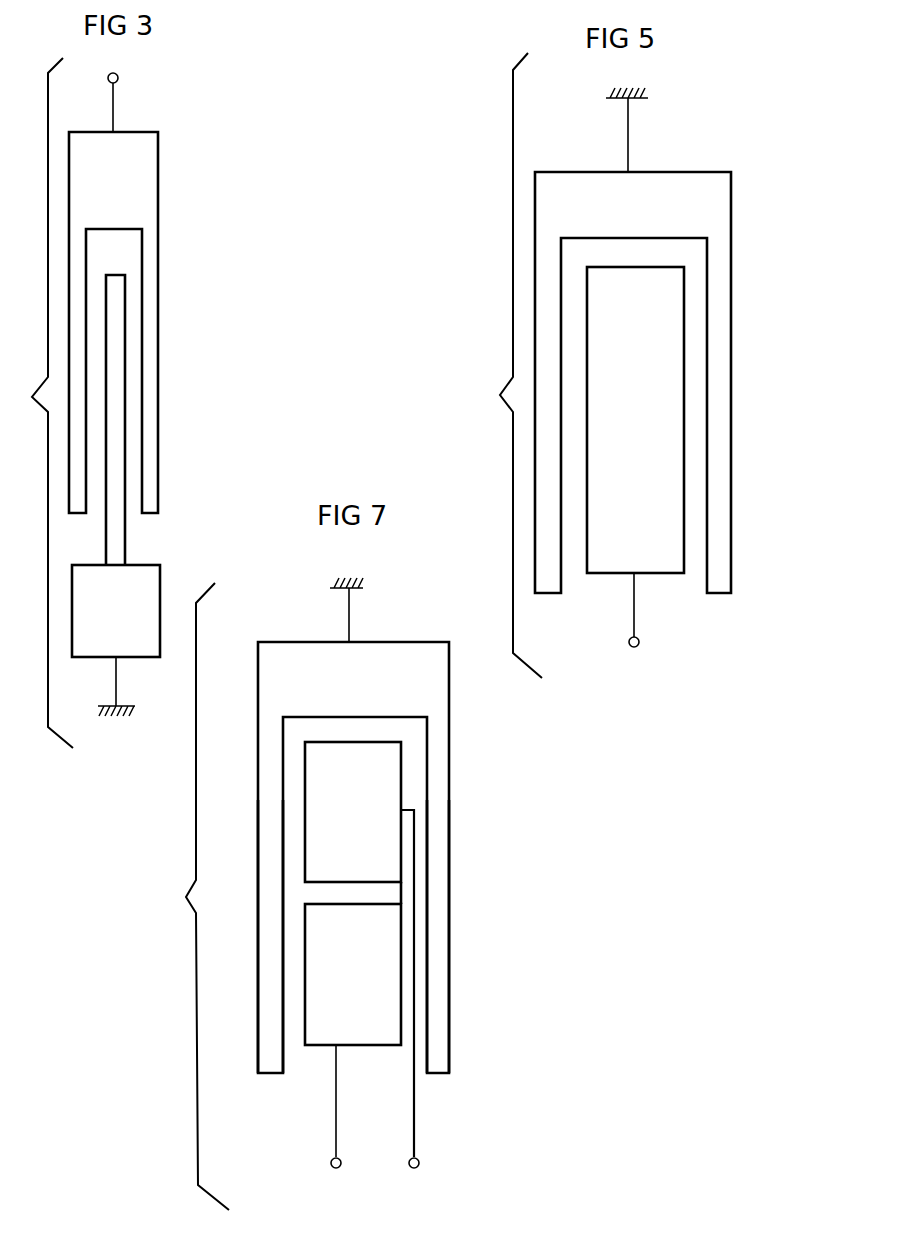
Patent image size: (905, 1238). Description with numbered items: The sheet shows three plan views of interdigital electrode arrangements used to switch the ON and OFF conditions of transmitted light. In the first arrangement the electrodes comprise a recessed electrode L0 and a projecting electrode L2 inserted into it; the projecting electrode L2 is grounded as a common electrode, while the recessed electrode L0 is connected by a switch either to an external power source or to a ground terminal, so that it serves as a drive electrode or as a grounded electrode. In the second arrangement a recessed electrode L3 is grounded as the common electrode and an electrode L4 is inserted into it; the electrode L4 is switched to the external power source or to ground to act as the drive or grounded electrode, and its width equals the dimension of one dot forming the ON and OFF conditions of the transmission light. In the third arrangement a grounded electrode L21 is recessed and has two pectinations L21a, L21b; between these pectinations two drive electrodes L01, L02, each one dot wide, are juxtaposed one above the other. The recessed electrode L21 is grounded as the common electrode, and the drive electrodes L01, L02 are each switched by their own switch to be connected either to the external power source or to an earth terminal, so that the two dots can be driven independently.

In FIG. 3, the recessed electrode L0 is at (155, 332).
In FIG. 3, the projecting electrode L2 is at (120, 445).
In FIG. 5, the recessed electrode L3 is at (720, 430).
In FIG. 5, the electrode L4 is at (643, 276).
In FIG. 7, the grounded electrode L21 is at (427, 688).
In FIG. 7, the pectination L21a is at (267, 1033).
In FIG. 7, the pectination L21b is at (442, 1045).
In FIG. 7, the drive electrode L02 is at (375, 782).
In FIG. 7, the drive electrode L01 is at (387, 962).